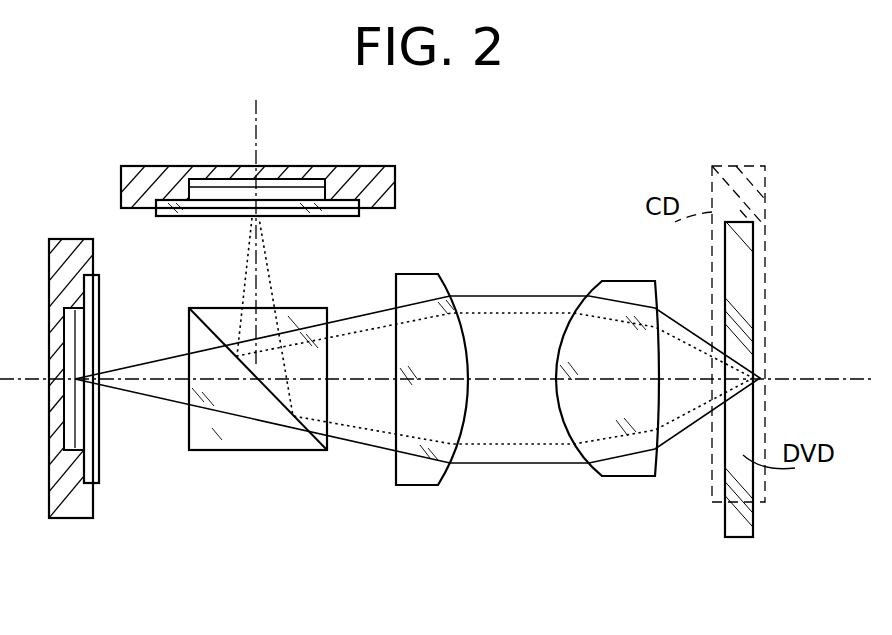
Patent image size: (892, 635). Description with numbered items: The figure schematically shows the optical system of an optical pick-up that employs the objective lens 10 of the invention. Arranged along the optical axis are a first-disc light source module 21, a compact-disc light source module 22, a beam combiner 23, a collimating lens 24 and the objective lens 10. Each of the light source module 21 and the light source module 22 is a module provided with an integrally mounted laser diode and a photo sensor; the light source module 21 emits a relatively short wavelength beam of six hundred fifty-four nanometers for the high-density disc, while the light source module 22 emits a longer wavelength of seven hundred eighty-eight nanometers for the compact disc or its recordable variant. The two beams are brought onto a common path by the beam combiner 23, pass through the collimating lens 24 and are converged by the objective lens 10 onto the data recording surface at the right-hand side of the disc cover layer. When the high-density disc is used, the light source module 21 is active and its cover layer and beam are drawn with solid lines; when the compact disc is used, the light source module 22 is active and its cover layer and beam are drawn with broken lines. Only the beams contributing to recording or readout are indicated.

The objective lens 10 is at (617, 468).
The DVD light source module 21 is at (70, 500).
The CD light source module 22 is at (377, 185).
The beam combiner 23 is at (265, 437).
The collimating lens 24 is at (422, 475).